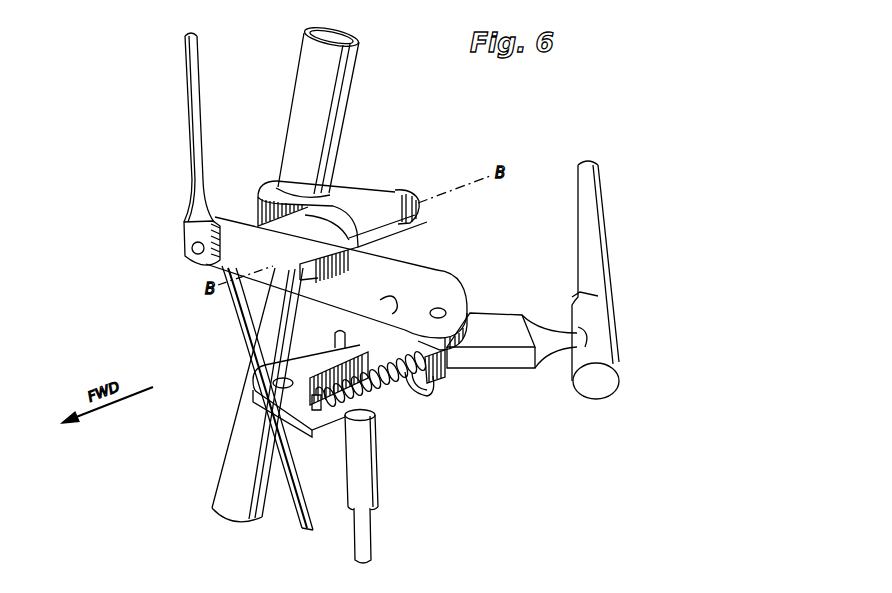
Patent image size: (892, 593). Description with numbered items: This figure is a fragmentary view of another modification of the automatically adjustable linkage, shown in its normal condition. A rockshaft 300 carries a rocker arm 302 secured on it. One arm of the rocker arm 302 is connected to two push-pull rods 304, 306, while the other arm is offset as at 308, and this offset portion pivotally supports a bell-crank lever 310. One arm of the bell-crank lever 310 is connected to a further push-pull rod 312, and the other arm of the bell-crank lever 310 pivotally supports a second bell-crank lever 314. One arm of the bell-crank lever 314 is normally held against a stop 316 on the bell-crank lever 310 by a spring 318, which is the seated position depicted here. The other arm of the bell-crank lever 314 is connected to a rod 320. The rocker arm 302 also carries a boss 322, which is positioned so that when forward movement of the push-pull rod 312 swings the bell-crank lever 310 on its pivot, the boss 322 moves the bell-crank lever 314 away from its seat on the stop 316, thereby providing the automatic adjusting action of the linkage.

The rockshaft 300 is at (421, 213).
The rocker arm 302 is at (250, 216).
The push-pull rod 304 is at (237, 298).
The push-pull rod 306 is at (190, 124).
The offset 308 is at (455, 294).
The bell-crank lever 310 is at (505, 313).
The push-pull rod 312 is at (605, 232).
The bell-crank lever 314 is at (331, 441).
The stop 316 is at (335, 336).
The spring 318 is at (380, 396).
The rod 320 is at (375, 534).
The boss 322 is at (322, 282).